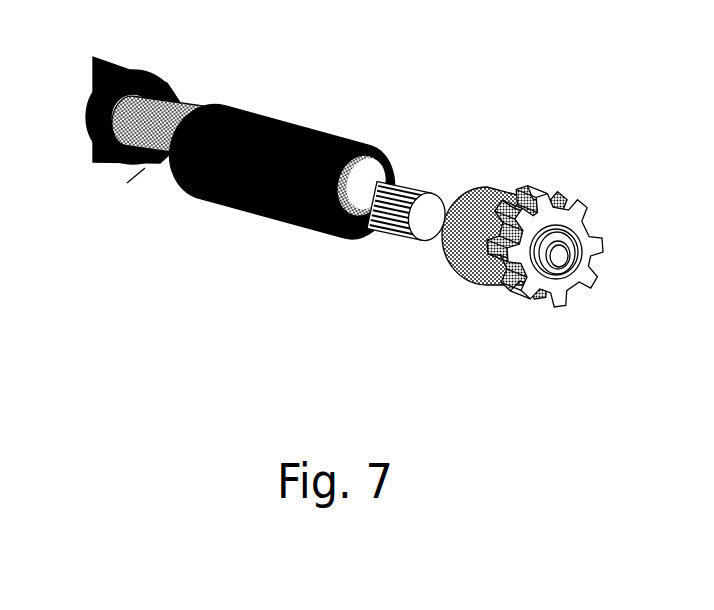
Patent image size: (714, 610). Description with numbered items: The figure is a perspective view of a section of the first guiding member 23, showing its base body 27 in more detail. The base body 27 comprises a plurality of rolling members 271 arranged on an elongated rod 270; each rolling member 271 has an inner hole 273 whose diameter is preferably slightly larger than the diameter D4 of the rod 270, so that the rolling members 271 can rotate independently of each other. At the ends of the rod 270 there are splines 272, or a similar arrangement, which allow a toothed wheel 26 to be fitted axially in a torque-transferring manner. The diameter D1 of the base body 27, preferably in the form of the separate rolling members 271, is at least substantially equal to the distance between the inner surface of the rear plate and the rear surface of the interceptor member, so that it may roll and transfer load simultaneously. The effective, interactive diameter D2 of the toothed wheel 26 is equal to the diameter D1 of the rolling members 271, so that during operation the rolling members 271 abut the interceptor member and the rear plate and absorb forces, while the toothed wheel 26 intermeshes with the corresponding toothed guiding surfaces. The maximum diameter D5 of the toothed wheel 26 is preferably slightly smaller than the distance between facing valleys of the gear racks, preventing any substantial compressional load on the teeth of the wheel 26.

The first guiding member 23 is at (329, 222).
The toothed wheel 26 is at (485, 225).
The base body 27 is at (151, 162).
The elongated rod 270 is at (162, 101).
The rolling member 271 is at (102, 163).
The splines 272 is at (411, 184).
The inner hole 273 is at (398, 146).
The diameter of the base body D1 is at (268, 230).
The effective diameter of the toothed wheel D2 is at (550, 203).
The diameter of the rod D4 is at (198, 101).
The maximum diameter of the toothed wheel D5 is at (524, 303).